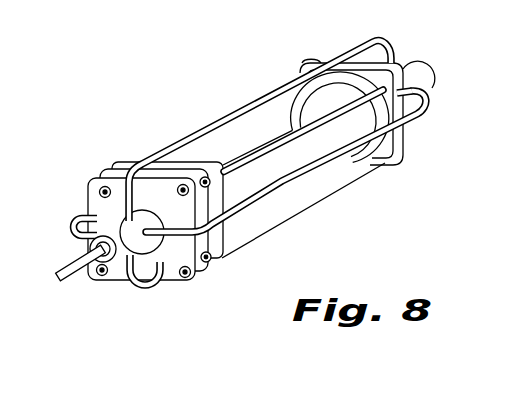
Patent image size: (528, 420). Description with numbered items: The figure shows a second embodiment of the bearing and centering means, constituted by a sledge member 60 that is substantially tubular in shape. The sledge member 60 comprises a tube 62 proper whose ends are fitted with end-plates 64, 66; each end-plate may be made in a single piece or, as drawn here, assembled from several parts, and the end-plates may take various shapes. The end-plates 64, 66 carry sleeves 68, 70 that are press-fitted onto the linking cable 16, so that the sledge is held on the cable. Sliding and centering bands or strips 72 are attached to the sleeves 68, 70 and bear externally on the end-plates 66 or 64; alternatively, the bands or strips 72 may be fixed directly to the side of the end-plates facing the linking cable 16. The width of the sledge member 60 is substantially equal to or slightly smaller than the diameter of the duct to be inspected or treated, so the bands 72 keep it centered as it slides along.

The linking cable 16 is at (75, 282).
The sledge member 60 is at (352, 167).
The tube 62 is at (290, 200).
The end-plate 64 is at (404, 98).
The end-plate 66 is at (224, 271).
The sleeve 68 is at (422, 78).
The sleeve 70 is at (137, 243).
The sliding and centering bands or strips 72 is at (223, 121).